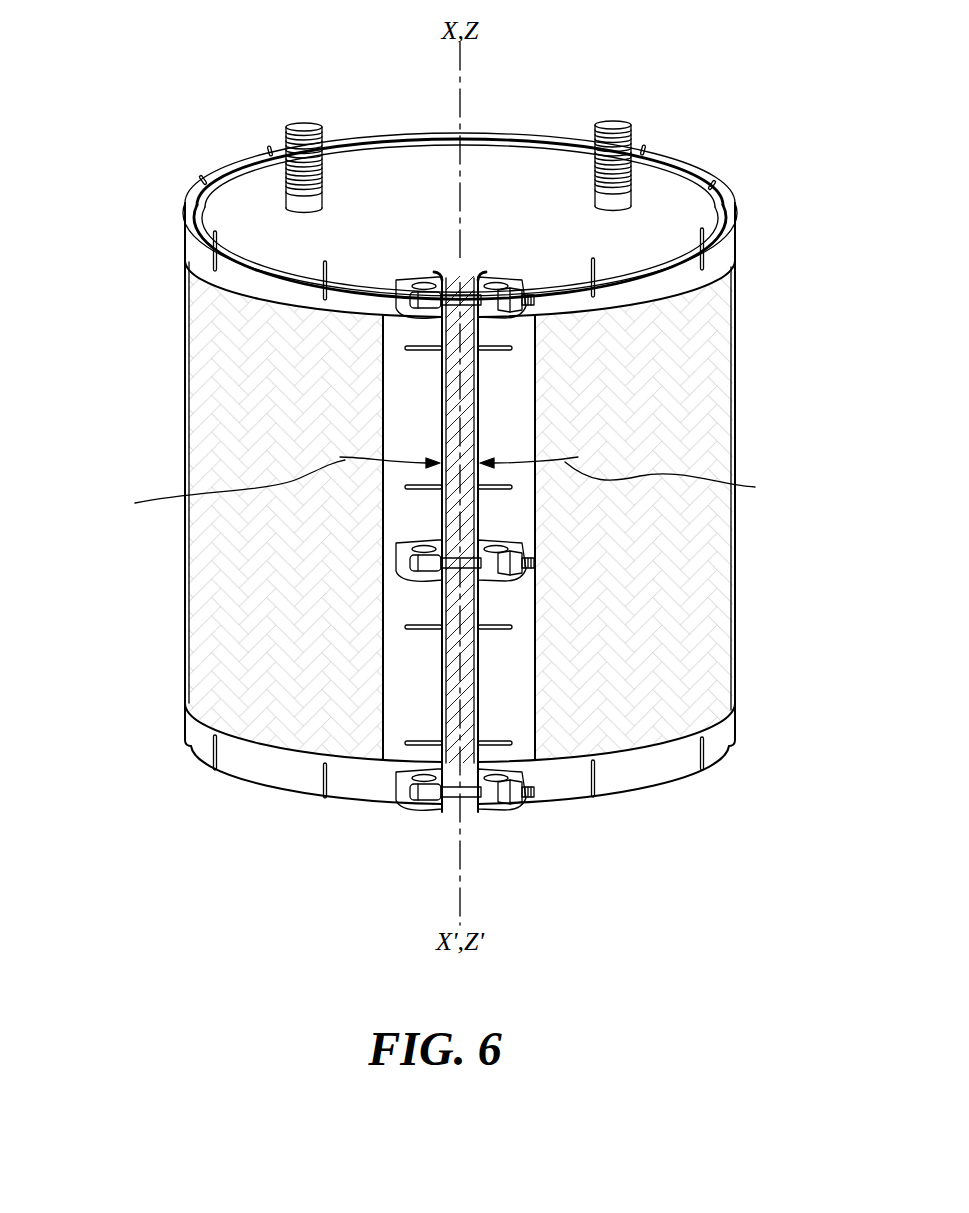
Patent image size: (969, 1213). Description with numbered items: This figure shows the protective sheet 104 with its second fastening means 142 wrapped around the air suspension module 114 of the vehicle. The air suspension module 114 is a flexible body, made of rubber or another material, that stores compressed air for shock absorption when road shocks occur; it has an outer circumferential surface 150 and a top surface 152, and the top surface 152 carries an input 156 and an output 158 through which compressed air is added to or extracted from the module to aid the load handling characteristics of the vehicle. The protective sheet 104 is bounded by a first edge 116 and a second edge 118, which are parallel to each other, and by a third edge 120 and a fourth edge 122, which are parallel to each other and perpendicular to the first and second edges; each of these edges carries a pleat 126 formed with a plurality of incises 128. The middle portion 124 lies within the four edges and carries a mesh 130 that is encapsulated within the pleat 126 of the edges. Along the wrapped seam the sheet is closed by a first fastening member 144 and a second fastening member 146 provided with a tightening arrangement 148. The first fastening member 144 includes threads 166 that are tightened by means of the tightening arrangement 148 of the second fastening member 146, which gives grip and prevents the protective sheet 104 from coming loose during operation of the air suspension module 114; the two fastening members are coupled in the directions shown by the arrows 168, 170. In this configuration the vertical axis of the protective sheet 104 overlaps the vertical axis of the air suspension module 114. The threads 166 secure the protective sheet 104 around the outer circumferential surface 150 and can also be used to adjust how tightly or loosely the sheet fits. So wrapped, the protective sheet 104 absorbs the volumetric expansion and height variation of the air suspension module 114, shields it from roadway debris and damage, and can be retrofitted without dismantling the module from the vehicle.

The protective sheet 104 is at (738, 550).
The air suspension module 114 is at (699, 213).
The first edge 116 is at (498, 772).
The second edge 118 is at (422, 772).
The third edge 120 is at (740, 773).
The fourth edge 122 is at (743, 188).
The middle portion 124 is at (722, 460).
The pleat 126 is at (560, 135).
The plurality of incises 128 is at (714, 186).
The mesh 130 is at (700, 690).
The second fastening means 142 is at (465, 272).
The first fastening member 144 is at (485, 318).
The second fastening member 146 is at (413, 298).
The tightening arrangement 148 is at (520, 300).
The outer circumferential surface 150 is at (447, 325).
The top surface 152 is at (411, 157).
The input 156 is at (286, 142).
The output 158 is at (631, 138).
The threads 166 is at (536, 303).
The arrow 168 is at (638, 480).
The arrow 170 is at (263, 487).